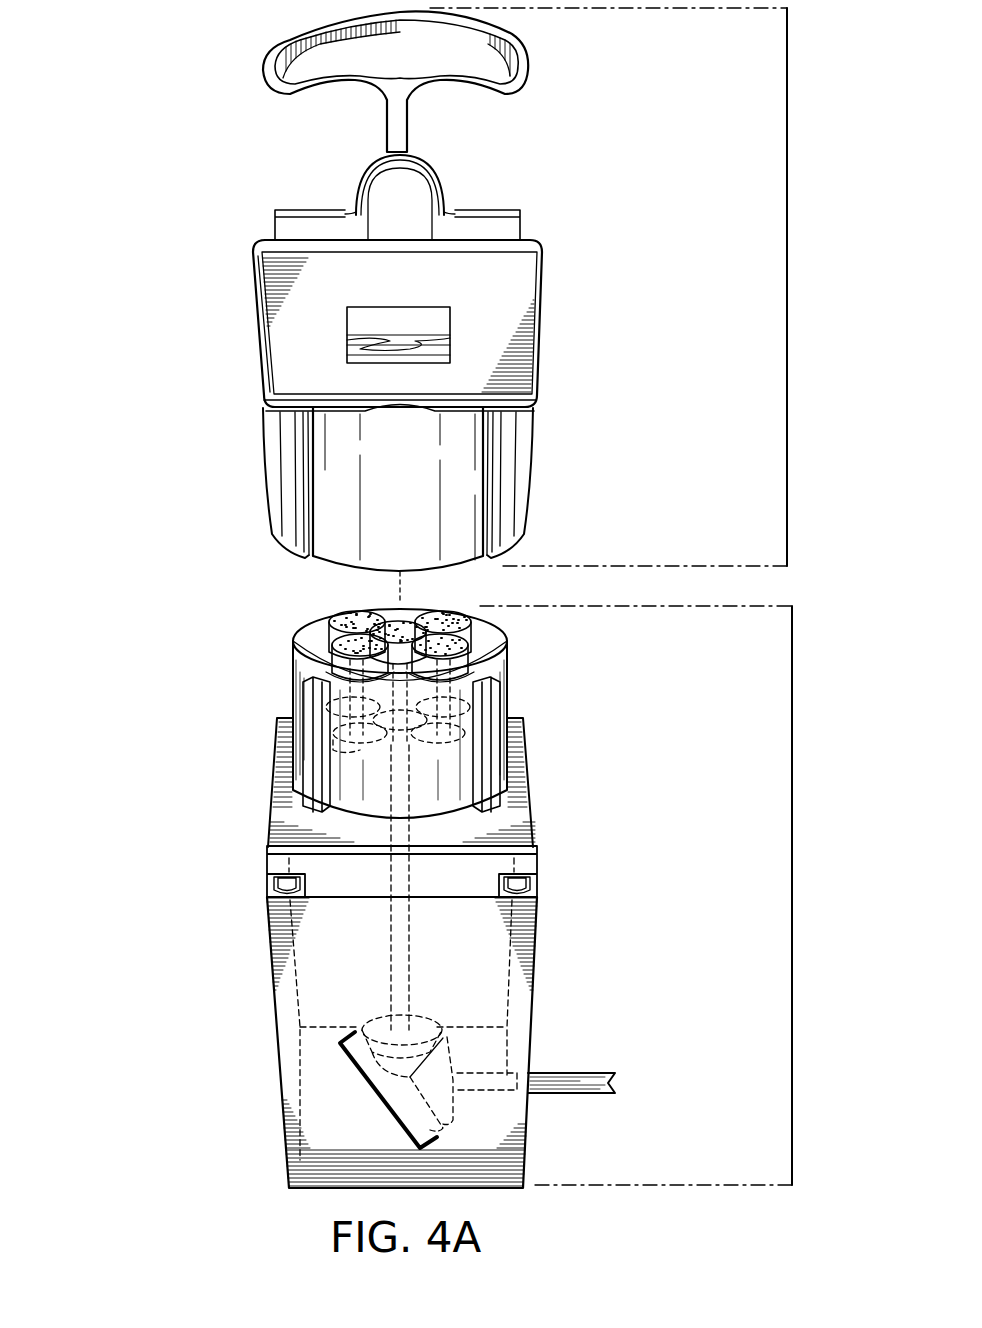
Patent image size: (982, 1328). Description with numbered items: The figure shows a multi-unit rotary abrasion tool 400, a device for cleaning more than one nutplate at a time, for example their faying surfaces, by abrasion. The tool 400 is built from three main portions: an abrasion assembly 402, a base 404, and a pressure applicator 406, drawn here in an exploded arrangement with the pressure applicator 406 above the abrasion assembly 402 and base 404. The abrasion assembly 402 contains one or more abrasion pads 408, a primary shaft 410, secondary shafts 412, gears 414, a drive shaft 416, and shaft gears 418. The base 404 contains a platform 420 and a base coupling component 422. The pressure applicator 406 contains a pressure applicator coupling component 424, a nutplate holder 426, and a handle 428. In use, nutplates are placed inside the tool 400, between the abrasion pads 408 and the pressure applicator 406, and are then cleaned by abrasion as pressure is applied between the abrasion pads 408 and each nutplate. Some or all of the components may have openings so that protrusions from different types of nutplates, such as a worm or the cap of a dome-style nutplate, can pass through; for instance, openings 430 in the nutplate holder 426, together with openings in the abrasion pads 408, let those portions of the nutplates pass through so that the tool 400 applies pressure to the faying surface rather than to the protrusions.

The multi-unit rotary abrasion tool 400 is at (146, 122).
The abrasion assembly 402 is at (185, 592).
The base 404 is at (794, 893).
The pressure applicator 406 is at (789, 287).
The abrasion pads 408 is at (332, 654).
The primary shaft 410 is at (403, 953).
The secondary shafts 412 is at (362, 732).
The gears 414 is at (265, 690).
The drive shaft 416 is at (480, 1087).
The shaft gears 418 is at (380, 1097).
The platform 420 is at (470, 973).
The base coupling component 422 is at (500, 652).
The pressure applicator coupling component 424 is at (556, 396).
The nutplate holder 426 is at (556, 234).
The handle 428 is at (492, 68).
The openings 430 is at (398, 352).